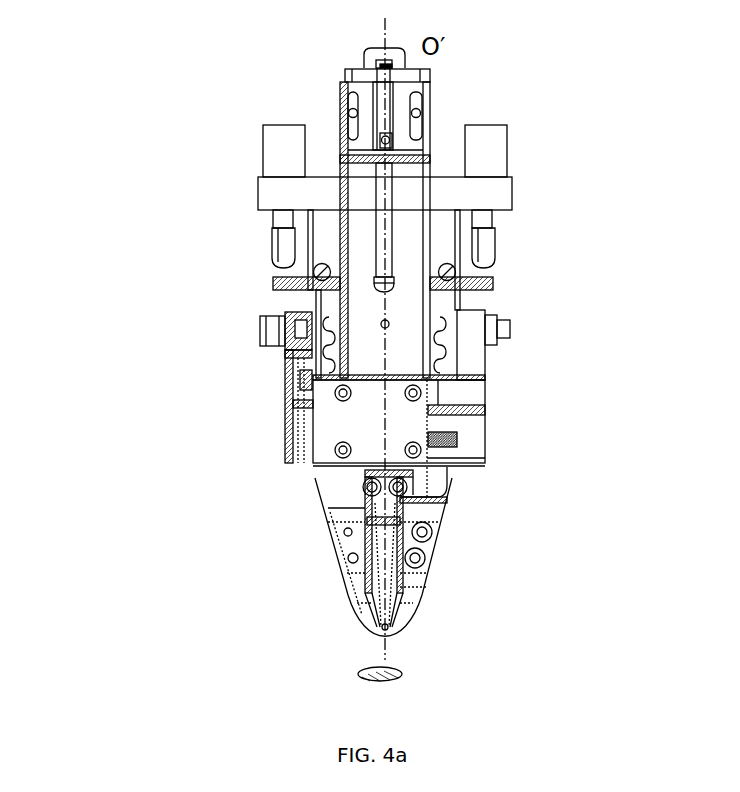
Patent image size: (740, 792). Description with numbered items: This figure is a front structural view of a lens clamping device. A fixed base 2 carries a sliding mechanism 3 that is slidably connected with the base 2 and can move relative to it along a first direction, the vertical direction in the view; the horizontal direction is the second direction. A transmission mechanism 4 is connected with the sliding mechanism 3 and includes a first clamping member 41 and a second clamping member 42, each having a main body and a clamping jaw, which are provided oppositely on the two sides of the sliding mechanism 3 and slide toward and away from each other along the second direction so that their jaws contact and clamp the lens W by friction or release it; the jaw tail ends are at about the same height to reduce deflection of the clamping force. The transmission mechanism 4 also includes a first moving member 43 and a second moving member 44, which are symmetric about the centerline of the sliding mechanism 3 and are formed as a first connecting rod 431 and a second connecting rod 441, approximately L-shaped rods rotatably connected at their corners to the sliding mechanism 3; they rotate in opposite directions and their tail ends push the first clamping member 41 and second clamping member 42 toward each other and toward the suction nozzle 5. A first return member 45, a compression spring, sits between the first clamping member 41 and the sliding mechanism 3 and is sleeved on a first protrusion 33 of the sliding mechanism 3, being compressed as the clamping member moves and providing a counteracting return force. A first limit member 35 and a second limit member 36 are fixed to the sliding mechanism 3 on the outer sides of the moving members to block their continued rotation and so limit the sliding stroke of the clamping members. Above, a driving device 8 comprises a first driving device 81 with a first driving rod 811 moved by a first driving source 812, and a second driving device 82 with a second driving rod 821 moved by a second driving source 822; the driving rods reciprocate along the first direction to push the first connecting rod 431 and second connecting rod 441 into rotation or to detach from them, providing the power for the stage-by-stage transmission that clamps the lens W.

The base 2 is at (355, 78).
The driving device 8 is at (672, 139).
The first driving device 81 is at (624, 77).
The second driving device 82 is at (624, 155).
The first driving rod 811 is at (290, 240).
The first driving source 812 is at (285, 152).
The second driving rod 821 is at (483, 236).
The second driving source 822 is at (488, 146).
The sliding mechanism 3 is at (360, 327).
The first limit member 35 is at (300, 328).
The second limit member 36 is at (500, 320).
The first protrusion 33 is at (443, 433).
The first moving member 43 is at (217, 320).
The first connecting rod 431 is at (272, 331).
The second moving member 44 is at (284, 370).
The second connecting rod 441 is at (384, 345).
The transmission mechanism 4 is at (115, 313).
The first clamping member 41 is at (333, 483).
The second clamping member 42 is at (353, 558).
The first return member 45 is at (458, 468).
The suction nozzle 5 is at (392, 640).
The lens W is at (360, 678).